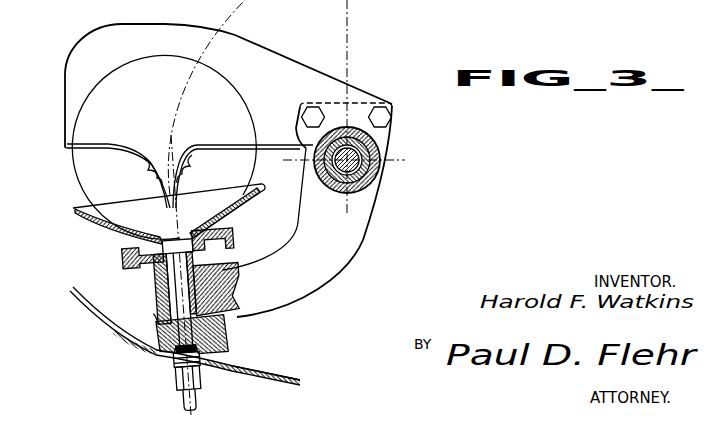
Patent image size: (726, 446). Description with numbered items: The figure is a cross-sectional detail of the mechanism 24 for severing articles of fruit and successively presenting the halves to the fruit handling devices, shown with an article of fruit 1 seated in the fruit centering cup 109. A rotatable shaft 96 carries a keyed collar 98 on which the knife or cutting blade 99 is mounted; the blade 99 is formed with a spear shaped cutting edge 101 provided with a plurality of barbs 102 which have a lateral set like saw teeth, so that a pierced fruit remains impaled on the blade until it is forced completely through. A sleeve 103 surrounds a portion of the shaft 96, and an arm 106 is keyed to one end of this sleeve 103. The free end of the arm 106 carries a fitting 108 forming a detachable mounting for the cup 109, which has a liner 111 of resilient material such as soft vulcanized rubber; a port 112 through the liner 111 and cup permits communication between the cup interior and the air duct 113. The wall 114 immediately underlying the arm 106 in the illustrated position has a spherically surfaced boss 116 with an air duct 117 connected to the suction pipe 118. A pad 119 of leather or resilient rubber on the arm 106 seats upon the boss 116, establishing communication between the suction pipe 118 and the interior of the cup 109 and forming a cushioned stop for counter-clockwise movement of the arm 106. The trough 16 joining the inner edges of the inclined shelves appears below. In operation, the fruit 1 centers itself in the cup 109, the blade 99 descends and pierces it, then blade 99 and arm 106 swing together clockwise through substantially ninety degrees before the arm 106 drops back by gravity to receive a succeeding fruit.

The article of fruit 1 is at (78, 106).
The trough 16 is at (252, 357).
The mechanism for presenting halved articles of fruit 24 is at (377, 218).
The rotatable shaft 96 is at (379, 172).
The collar 98 is at (381, 152).
The knife or cutting blade 99 is at (287, 63).
The spear shaped cutting edge 101 is at (131, 152).
The barbs 102 is at (188, 165).
The sleeve 103 is at (331, 178).
The arm 106 is at (340, 266).
The fitting 108 is at (160, 255).
The fruit centering cup 109 is at (88, 217).
The liner 111 is at (115, 230).
The port 112 is at (188, 231).
The air duct 113 is at (161, 301).
The wall 114 is at (268, 375).
The spherically surfaced boss 116 is at (212, 308).
The air duct 117 is at (166, 362).
The suction pipe 118 is at (168, 390).
The pad 119 is at (141, 317).